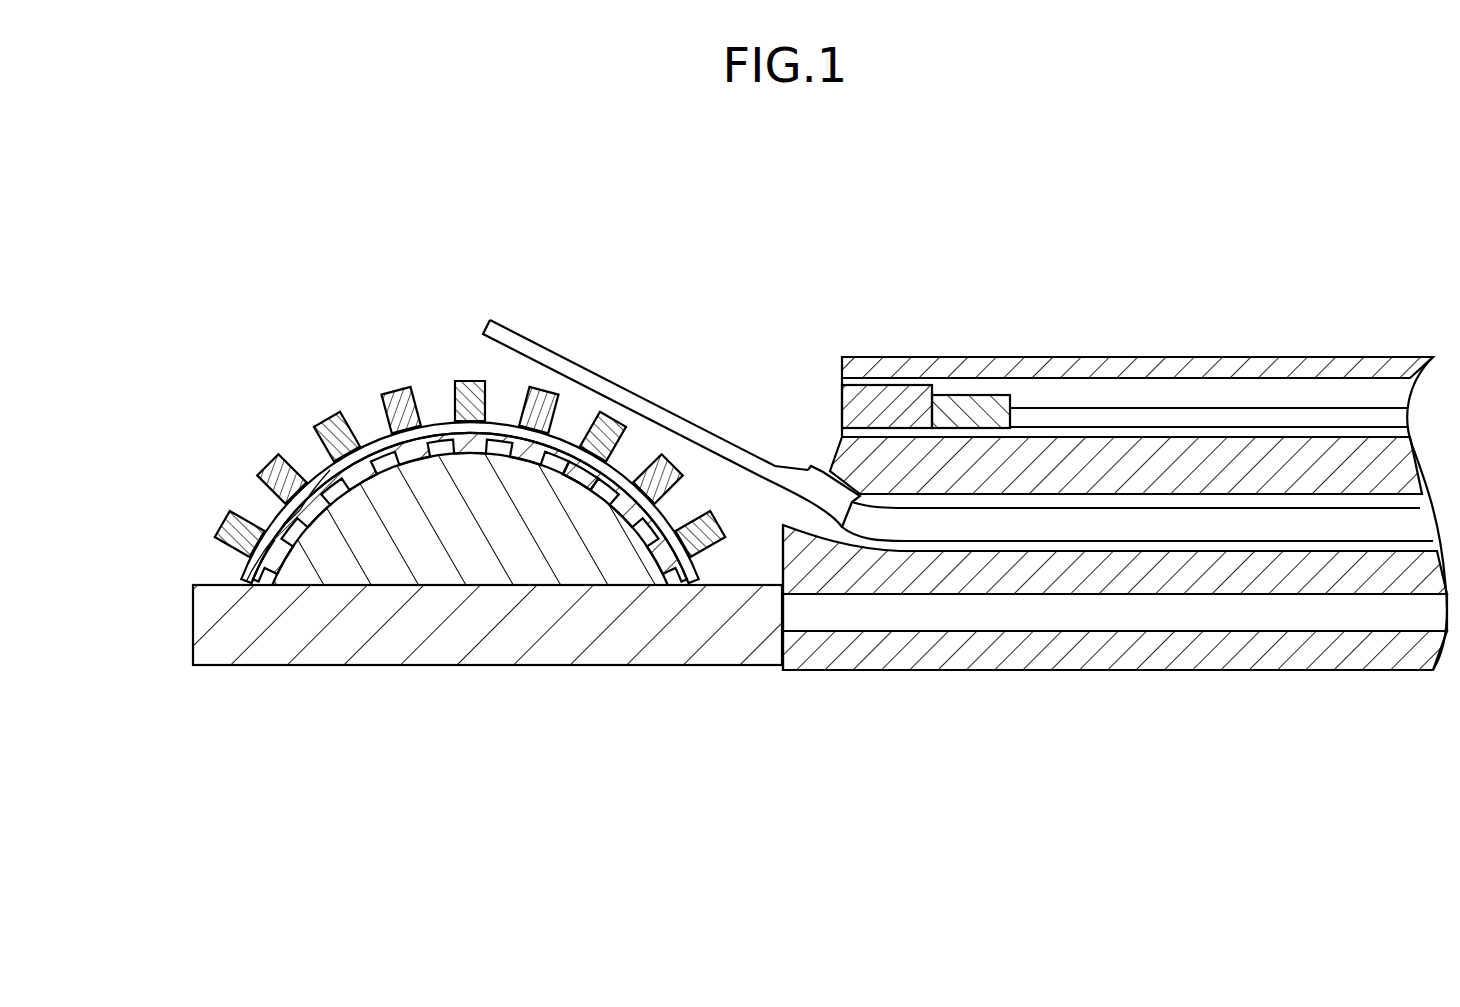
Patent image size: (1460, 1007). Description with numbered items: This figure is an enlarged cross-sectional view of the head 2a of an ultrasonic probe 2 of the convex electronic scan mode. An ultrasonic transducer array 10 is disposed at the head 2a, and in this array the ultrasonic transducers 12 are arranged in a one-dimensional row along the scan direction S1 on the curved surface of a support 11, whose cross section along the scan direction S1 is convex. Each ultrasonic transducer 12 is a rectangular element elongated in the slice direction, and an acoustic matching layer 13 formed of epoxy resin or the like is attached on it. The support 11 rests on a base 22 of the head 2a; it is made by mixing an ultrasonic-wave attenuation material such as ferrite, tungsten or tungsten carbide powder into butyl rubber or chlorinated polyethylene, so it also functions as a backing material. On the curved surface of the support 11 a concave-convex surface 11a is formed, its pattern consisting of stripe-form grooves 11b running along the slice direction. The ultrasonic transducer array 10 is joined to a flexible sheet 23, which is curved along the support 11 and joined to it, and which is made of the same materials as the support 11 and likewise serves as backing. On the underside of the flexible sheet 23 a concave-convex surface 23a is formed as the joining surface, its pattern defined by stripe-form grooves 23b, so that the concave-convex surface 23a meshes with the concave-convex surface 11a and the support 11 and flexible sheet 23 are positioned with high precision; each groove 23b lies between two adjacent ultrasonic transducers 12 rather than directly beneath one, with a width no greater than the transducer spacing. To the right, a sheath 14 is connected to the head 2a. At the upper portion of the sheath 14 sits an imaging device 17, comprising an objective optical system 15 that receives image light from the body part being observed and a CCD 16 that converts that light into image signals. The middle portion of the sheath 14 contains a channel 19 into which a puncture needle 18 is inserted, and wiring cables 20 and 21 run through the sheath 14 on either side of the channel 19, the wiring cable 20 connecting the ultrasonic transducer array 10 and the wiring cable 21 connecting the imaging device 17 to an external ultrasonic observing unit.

The ultrasonic probe 2 is at (852, 785).
The head 2a is at (742, 585).
The ultrasonic transducer array 10 is at (406, 360).
The support 11 is at (477, 533).
The concave-convex surface 11a is at (694, 567).
The grooves 11b is at (640, 497).
The ultrasonic transducer 12 is at (320, 447).
The acoustic matching layer 13 is at (340, 418).
The sheath 14 is at (1108, 660).
The objective optical system 15 is at (882, 403).
The CCD 16 is at (970, 405).
The imaging device 17 is at (862, 292).
The puncture needle 18 is at (572, 370).
The channel 19 is at (806, 466).
The wiring cable 20 is at (1262, 618).
The wiring cable 21 is at (1255, 410).
The base 22 is at (198, 627).
The flexible sheet 23 is at (320, 483).
The concave-convex surface 23a is at (294, 571).
The grooves 23b is at (332, 502).
The scan direction S1 is at (317, 225).